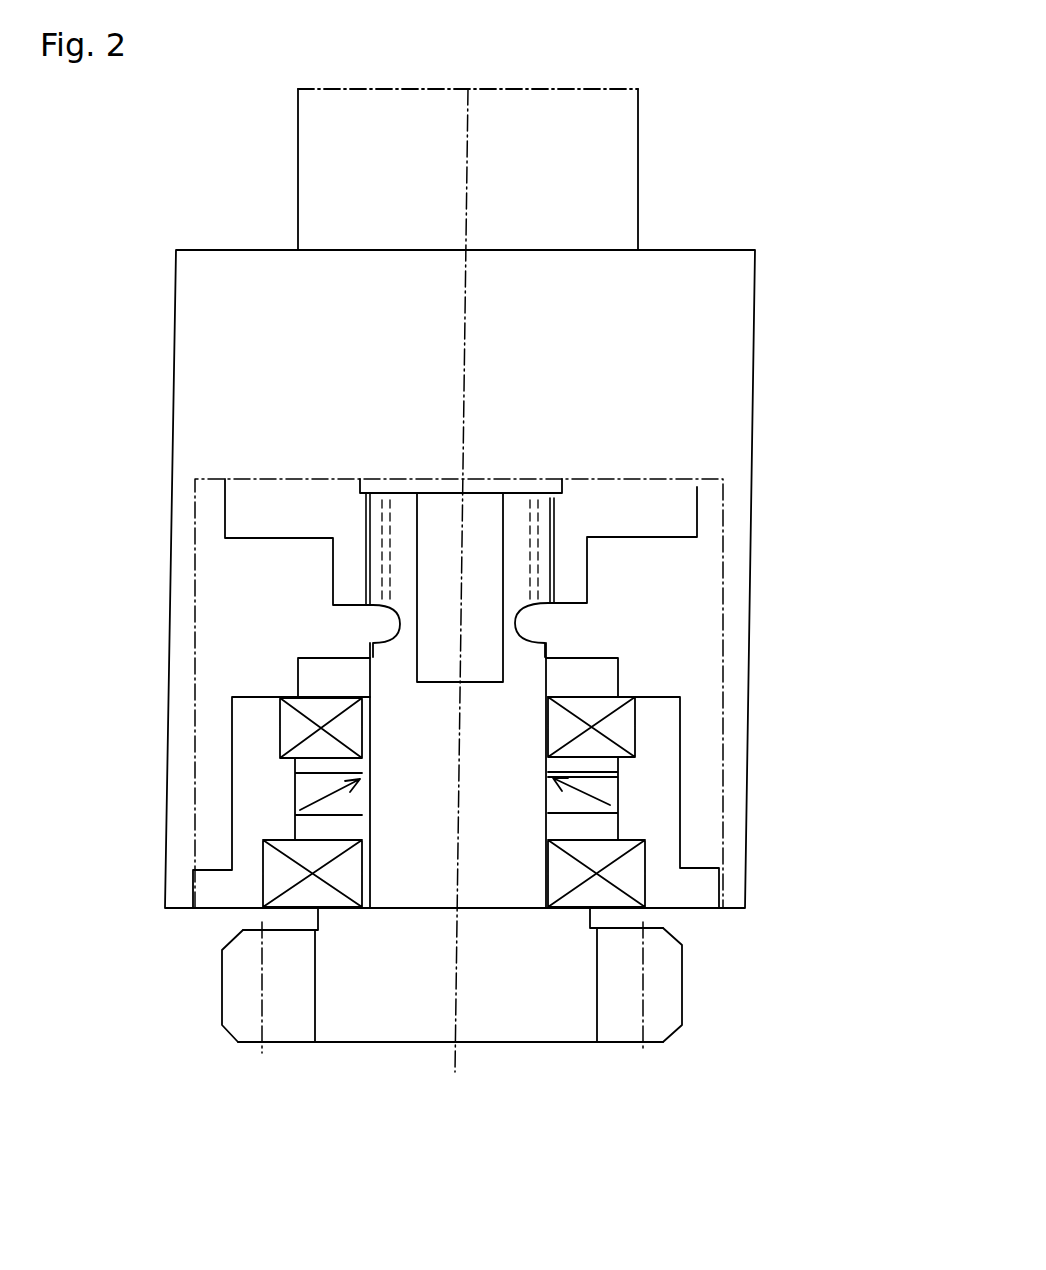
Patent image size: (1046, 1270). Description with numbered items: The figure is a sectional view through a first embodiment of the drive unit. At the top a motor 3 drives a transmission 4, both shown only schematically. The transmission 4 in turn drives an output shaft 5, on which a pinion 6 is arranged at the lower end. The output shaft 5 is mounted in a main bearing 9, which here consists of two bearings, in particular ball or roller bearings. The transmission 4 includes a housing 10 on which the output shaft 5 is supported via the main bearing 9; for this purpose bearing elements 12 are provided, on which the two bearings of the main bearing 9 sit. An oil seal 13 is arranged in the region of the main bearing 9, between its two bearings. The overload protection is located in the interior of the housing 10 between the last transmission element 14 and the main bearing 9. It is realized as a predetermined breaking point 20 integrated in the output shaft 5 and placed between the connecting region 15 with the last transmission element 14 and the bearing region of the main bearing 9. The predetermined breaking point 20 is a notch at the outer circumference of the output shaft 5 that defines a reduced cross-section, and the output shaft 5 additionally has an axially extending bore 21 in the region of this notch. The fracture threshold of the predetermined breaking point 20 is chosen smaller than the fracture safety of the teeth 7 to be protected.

The motor 3 is at (625, 103).
The transmission 4 is at (725, 350).
The output shaft 5 is at (450, 842).
The pinion 6 is at (294, 1025).
The teeth 7 is at (655, 1003).
The main bearing 9 is at (608, 855).
The housing 10 is at (733, 628).
The bearing elements 12 is at (258, 790).
The oil seal 13 is at (605, 790).
The last transmission element 14 is at (656, 510).
The connecting region 15 is at (535, 564).
The predetermined breaking point 20 is at (550, 636).
The axially extending bore 21 is at (460, 587).